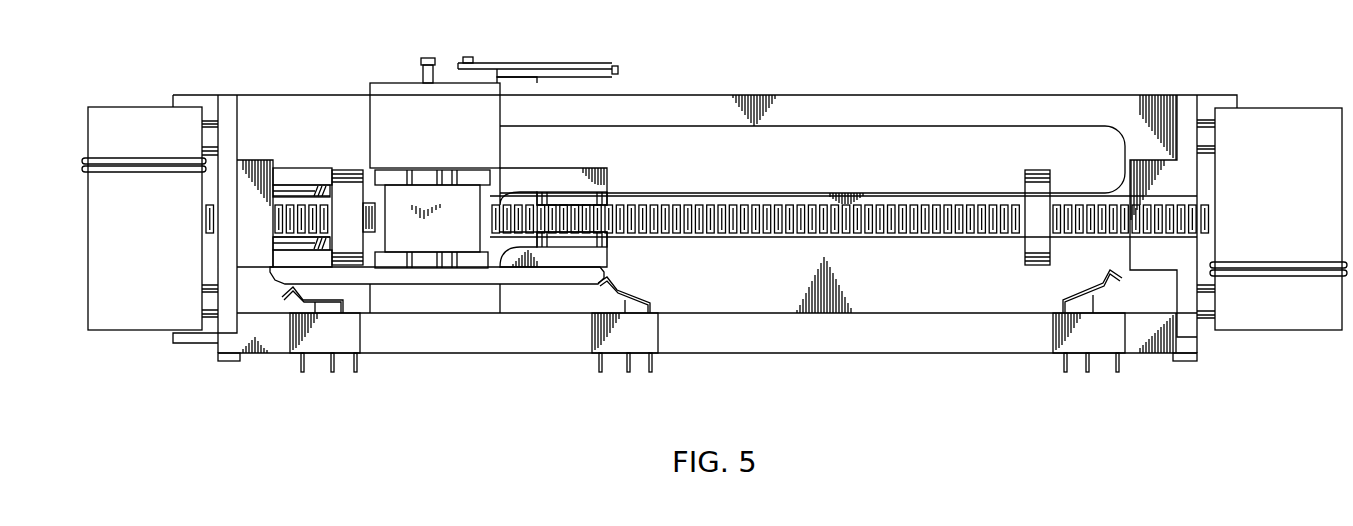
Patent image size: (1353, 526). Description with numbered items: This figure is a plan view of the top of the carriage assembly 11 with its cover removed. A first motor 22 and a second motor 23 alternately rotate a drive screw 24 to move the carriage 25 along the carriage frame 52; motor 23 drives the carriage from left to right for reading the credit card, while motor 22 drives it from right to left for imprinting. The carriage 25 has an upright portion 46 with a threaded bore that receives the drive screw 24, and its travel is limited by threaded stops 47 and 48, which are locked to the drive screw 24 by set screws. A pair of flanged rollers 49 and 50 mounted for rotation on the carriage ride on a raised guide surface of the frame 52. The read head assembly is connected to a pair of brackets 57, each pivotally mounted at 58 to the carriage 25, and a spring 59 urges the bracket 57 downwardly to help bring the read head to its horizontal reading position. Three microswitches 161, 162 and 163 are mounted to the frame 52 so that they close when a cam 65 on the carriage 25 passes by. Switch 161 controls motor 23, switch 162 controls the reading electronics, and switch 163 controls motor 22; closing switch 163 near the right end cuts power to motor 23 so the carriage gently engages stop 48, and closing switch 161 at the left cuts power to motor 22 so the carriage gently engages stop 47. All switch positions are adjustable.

The carriage assembly 11 is at (860, 80).
The first motor 22 is at (158, 115).
The second motor 23 is at (1275, 115).
The drive screw 24 is at (907, 233).
The carriage 25 is at (392, 105).
The upright portion 46 is at (460, 238).
The threaded stop 47 is at (343, 185).
The threaded stop 48 is at (1033, 180).
The flanged roller 49 is at (290, 243).
The flanged roller 50 is at (610, 195).
The carriage frame 52 is at (998, 343).
The bracket 57 is at (530, 73).
The pivotal mounting 58 is at (468, 57).
The spring 59 is at (597, 63).
The cam 65 is at (543, 277).
The microswitch 161 is at (321, 347).
The microswitch 162 is at (638, 345).
The microswitch 163 is at (1100, 343).